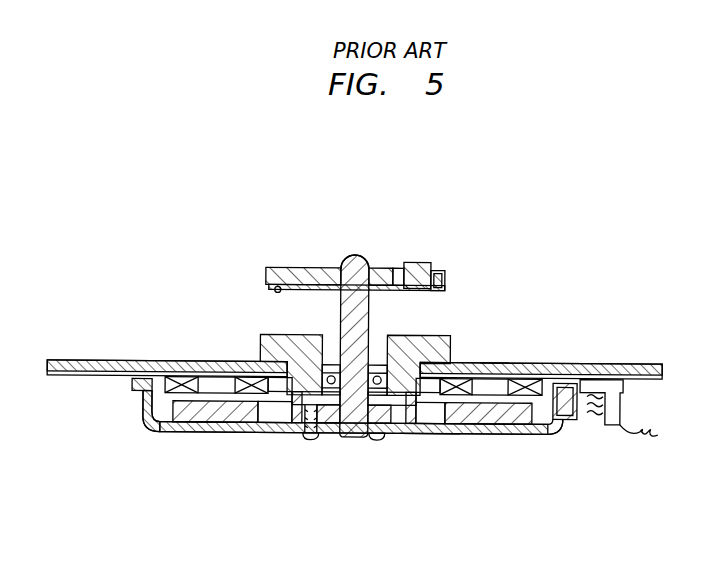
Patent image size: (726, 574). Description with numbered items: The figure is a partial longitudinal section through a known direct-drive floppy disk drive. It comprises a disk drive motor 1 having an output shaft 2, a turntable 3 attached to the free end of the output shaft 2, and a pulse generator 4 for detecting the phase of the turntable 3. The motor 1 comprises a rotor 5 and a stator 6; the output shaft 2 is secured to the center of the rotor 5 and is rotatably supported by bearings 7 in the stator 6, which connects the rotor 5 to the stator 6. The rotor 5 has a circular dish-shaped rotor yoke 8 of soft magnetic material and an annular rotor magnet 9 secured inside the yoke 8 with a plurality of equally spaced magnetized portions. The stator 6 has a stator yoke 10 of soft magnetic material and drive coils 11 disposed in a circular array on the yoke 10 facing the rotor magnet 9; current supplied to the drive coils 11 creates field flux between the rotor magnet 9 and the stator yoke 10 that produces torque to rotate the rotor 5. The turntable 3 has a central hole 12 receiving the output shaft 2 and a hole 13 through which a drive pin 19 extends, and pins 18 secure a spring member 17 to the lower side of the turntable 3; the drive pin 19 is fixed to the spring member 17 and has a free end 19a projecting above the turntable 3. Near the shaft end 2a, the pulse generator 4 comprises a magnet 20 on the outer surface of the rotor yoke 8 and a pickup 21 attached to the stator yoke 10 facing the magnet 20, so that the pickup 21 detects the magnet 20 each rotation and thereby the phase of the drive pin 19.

The disk drive motor 1 is at (431, 433).
The output shaft 2 is at (369, 312).
The shaft end 2a is at (347, 258).
The turntable 3 is at (297, 270).
The pulse generator 4 is at (569, 430).
The rotor 5 is at (391, 440).
The stator 6 is at (497, 362).
The bearings 7 is at (336, 332).
The rotor yoke 8 is at (503, 436).
The rotor magnet 9 is at (470, 436).
The stator yoke 10 is at (567, 362).
The drive coils 11 is at (184, 380).
The central hole 12 is at (380, 268).
The hole 13 is at (398, 268).
The spring member 17 is at (432, 291).
The pins 18 is at (270, 290).
The drive pin 19 is at (445, 276).
The free end 19a is at (418, 262).
The magnet 20 is at (565, 420).
The pickup 21 is at (620, 408).